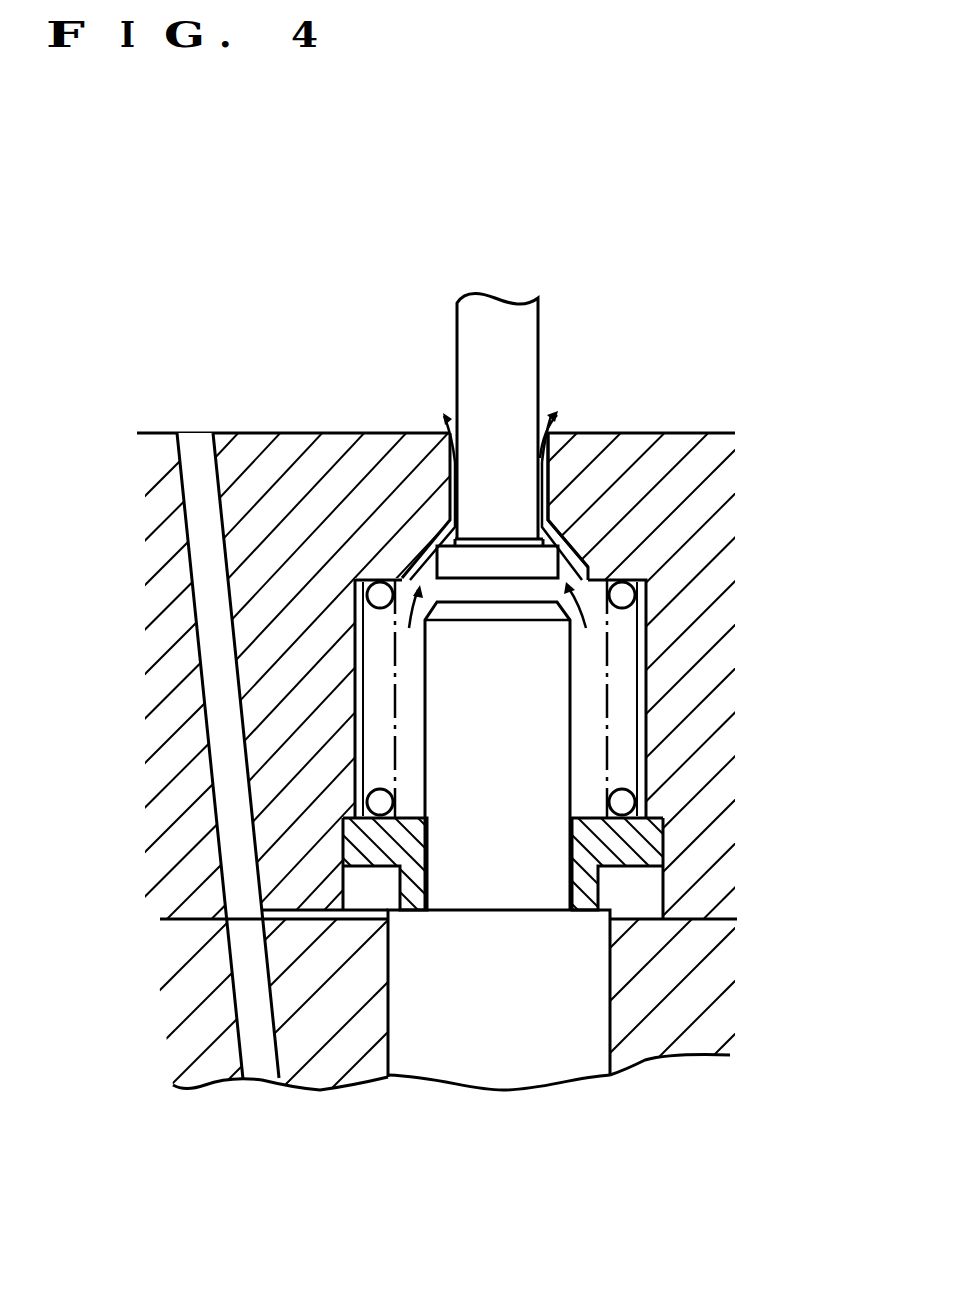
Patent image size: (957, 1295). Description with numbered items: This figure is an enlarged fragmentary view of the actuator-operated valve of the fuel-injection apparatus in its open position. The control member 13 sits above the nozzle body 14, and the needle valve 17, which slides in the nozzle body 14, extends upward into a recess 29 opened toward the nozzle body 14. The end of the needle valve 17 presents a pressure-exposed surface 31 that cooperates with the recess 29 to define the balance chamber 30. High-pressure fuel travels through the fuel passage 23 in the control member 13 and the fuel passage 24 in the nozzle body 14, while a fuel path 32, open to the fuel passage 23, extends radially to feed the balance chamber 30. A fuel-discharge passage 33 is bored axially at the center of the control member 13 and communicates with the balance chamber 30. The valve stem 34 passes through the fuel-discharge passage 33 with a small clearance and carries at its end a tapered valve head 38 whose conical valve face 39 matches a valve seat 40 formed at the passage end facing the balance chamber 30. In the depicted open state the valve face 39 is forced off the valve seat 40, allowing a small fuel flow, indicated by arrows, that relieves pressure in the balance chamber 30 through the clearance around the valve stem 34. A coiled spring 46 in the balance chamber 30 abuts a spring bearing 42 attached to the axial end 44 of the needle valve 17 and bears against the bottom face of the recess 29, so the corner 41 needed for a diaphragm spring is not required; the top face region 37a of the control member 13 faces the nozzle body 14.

The control member 13 is at (687, 745).
The nozzle body 14 is at (675, 1000).
The needle valve 17 is at (507, 1042).
The fuel passage 23 is at (212, 617).
The fuel passage 24 is at (248, 1018).
The recess 29 is at (644, 710).
The balance chamber 30 is at (408, 719).
The pressure-exposed surface 31 is at (465, 592).
The fuel path 32 is at (307, 918).
The fuel-discharge passage 33 is at (540, 490).
The valve stem 34 is at (517, 335).
The mating surface 37a is at (193, 923).
The tapered valve head 38 is at (500, 560).
The conical valve face 39 is at (614, 476).
The valve seat 40 is at (690, 503).
The corner 41 is at (650, 590).
The spring bearing 42 is at (365, 848).
The axial end 44 is at (490, 823).
The coiled spring 46 is at (625, 683).